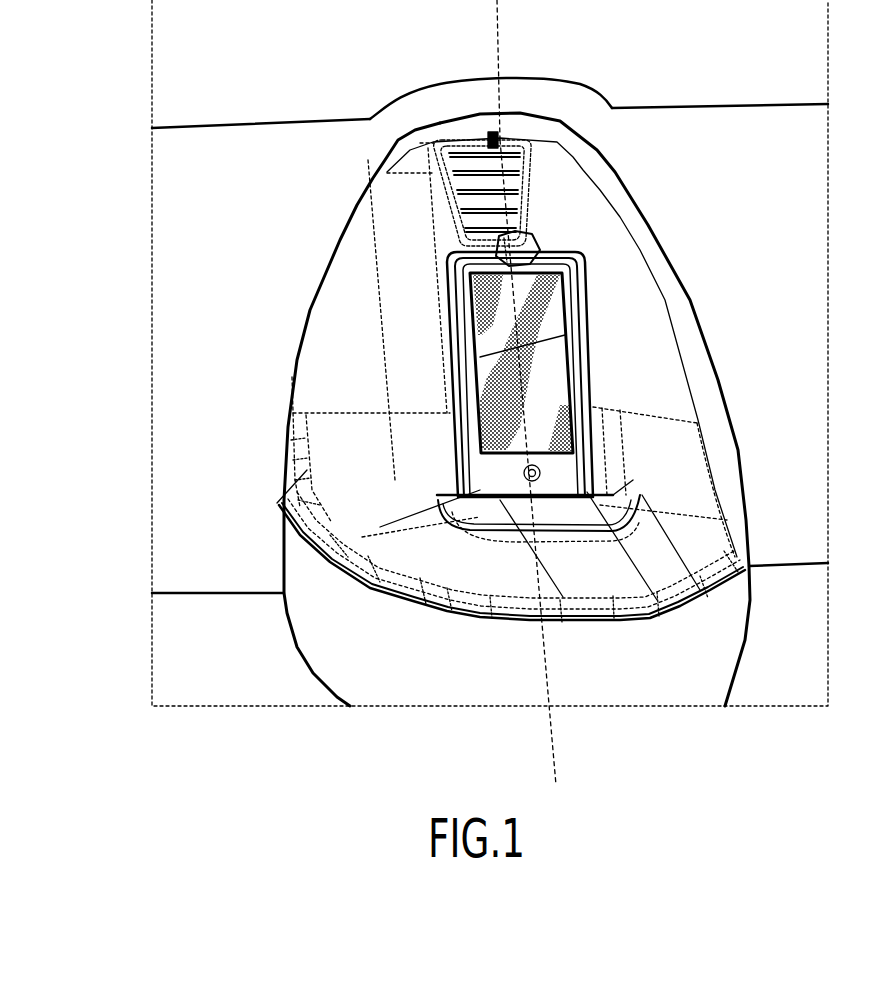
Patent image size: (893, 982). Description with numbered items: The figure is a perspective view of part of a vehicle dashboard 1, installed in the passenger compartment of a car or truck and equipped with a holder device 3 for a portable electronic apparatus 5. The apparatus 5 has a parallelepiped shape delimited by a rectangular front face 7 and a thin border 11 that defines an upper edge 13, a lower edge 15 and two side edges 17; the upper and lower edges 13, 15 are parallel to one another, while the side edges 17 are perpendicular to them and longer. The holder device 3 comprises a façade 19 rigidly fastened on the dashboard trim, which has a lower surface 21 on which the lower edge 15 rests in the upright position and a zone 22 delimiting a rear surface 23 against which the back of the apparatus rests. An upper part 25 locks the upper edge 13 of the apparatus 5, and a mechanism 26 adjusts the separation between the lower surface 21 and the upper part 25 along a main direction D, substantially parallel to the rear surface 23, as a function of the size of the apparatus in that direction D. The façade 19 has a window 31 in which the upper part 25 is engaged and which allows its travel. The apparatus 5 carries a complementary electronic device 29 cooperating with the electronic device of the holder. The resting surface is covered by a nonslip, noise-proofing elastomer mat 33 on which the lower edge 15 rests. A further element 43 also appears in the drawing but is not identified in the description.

The dashboard 1 is at (118, 295).
The holder device 3 is at (546, 193).
The portable electronic apparatus 5 is at (550, 378).
The front face 7 is at (551, 408).
The border 11 is at (445, 303).
The upper edge 13 is at (547, 246).
The lower edge 15 is at (562, 490).
The side edges 17 is at (462, 365).
The façade 19 is at (338, 398).
The lower surface 21 is at (474, 518).
The zone 22 is at (453, 418).
The rear surface 23 is at (432, 338).
The upper part 25 is at (470, 257).
The mechanism 26 is at (430, 173).
The complementary electronic device 29 is at (582, 334).
The window 31 is at (455, 211).
The mat 33 is at (640, 492).
The air duct 43 is at (500, 100).
The main direction D is at (558, 756).